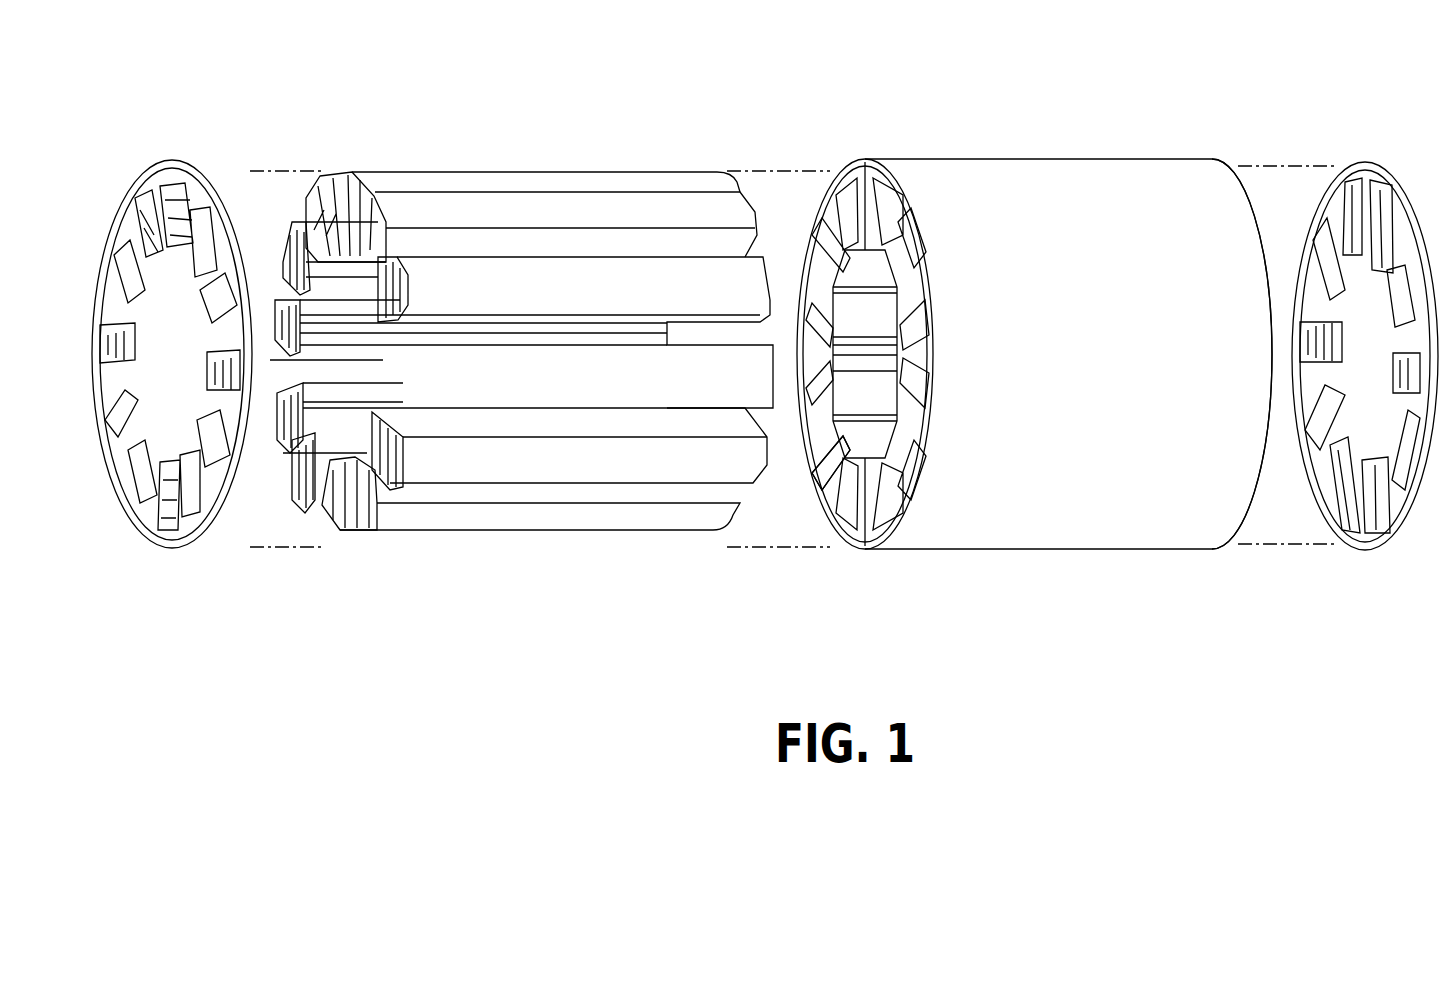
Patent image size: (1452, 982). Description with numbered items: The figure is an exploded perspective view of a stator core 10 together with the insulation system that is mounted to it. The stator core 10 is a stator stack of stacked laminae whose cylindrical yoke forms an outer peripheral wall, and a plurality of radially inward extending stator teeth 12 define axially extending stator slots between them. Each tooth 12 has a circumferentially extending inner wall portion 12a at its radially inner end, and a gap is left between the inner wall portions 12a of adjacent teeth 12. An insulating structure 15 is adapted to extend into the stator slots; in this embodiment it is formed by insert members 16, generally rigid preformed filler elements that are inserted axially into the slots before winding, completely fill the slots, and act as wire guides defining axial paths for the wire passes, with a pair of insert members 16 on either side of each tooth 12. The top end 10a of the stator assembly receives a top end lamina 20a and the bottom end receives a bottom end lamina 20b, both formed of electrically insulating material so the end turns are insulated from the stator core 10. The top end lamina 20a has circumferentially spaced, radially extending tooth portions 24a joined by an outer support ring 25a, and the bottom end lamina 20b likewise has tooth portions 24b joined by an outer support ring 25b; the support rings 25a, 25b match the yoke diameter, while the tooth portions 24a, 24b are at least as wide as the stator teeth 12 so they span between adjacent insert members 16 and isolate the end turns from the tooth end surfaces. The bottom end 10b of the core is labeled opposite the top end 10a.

The stator core 10 is at (1062, 158).
The top end 10a is at (868, 550).
The second end of housing 10b is at (1221, 550).
The stator teeth 12 is at (857, 210).
The inner wall portion 12a is at (850, 418).
The insulating structure 15 is at (261, 200).
The insert members 16 is at (458, 170).
The top end lamina 20a is at (167, 547).
The bottom end lamina 20b is at (1360, 547).
The tooth portions 24a is at (147, 222).
The tooth portions 24b is at (1400, 440).
The outer support ring 25a is at (170, 168).
The outer support ring 25b is at (1380, 175).